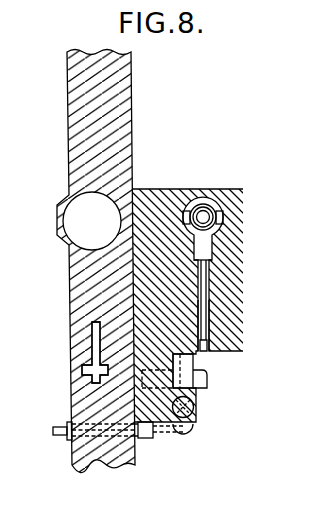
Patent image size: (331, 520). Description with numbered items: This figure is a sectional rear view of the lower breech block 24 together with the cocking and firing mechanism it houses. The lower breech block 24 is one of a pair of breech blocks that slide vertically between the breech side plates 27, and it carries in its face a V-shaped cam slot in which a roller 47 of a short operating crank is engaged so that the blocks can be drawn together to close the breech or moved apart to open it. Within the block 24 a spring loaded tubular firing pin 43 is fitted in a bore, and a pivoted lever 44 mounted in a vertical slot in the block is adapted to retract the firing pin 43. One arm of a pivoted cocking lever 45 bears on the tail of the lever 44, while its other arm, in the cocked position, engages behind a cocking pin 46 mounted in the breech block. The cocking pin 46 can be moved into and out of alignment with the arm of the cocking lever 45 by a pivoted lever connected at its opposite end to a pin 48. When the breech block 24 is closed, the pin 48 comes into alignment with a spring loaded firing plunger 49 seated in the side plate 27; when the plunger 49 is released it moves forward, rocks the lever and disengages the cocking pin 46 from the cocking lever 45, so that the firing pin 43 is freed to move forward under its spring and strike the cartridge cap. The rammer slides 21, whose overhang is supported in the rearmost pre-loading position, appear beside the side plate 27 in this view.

The rammer slides 21 is at (95, 330).
The lower breech block 24 is at (233, 293).
The breech side plate 27 is at (73, 262).
The firing pin 43 is at (221, 212).
The pivoted lever 44 is at (206, 252).
The cocking lever 45 is at (205, 340).
The cocking pin 46 is at (197, 376).
The roller 47 is at (192, 425).
The pin 48 is at (162, 430).
The firing plunger 49 is at (58, 427).